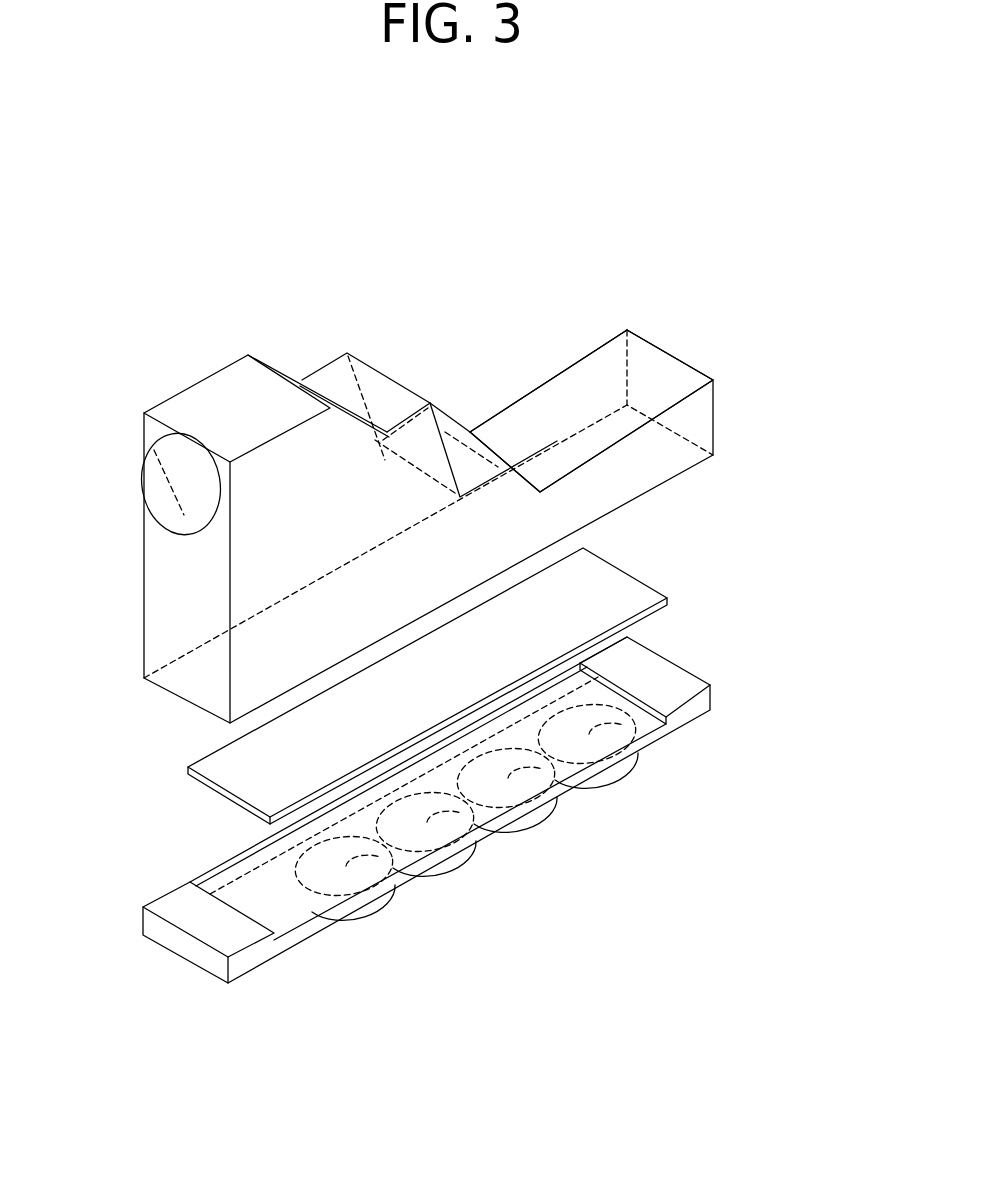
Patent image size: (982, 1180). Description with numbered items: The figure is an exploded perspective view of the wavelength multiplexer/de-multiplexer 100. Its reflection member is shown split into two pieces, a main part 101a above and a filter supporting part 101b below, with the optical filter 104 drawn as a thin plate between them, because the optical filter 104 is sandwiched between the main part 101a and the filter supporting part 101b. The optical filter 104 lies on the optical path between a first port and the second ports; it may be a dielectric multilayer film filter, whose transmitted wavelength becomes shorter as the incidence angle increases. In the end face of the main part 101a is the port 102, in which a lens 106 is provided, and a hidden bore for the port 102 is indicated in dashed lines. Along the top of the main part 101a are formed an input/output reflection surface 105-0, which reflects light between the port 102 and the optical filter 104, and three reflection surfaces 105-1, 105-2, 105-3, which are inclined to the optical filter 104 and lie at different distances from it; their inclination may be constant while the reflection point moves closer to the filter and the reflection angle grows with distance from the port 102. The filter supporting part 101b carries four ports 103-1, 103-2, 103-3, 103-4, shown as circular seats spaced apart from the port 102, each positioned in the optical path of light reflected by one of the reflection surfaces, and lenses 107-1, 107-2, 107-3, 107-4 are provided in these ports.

The wavelength multiplexer/de-multiplexer 100 is at (611, 258).
The main part 101a is at (697, 418).
The filter supporting part 101b is at (705, 686).
The port 102 is at (193, 468).
The port 103-1 is at (392, 940).
The port 103-2 is at (478, 875).
The port 103-3 is at (560, 803).
The port 103-4 is at (648, 742).
The optical filter 104 is at (613, 578).
The input/output reflection surface 105-0 is at (302, 380).
The reflection surface 105-1 is at (372, 388).
The reflection surface 105-2 is at (450, 440).
The reflection surface 105-3 is at (590, 380).
The lens 106 is at (150, 486).
The lens 107-1 is at (372, 920).
The lens 107-2 is at (452, 876).
The lens 107-3 is at (533, 826).
The lens 107-4 is at (620, 770).